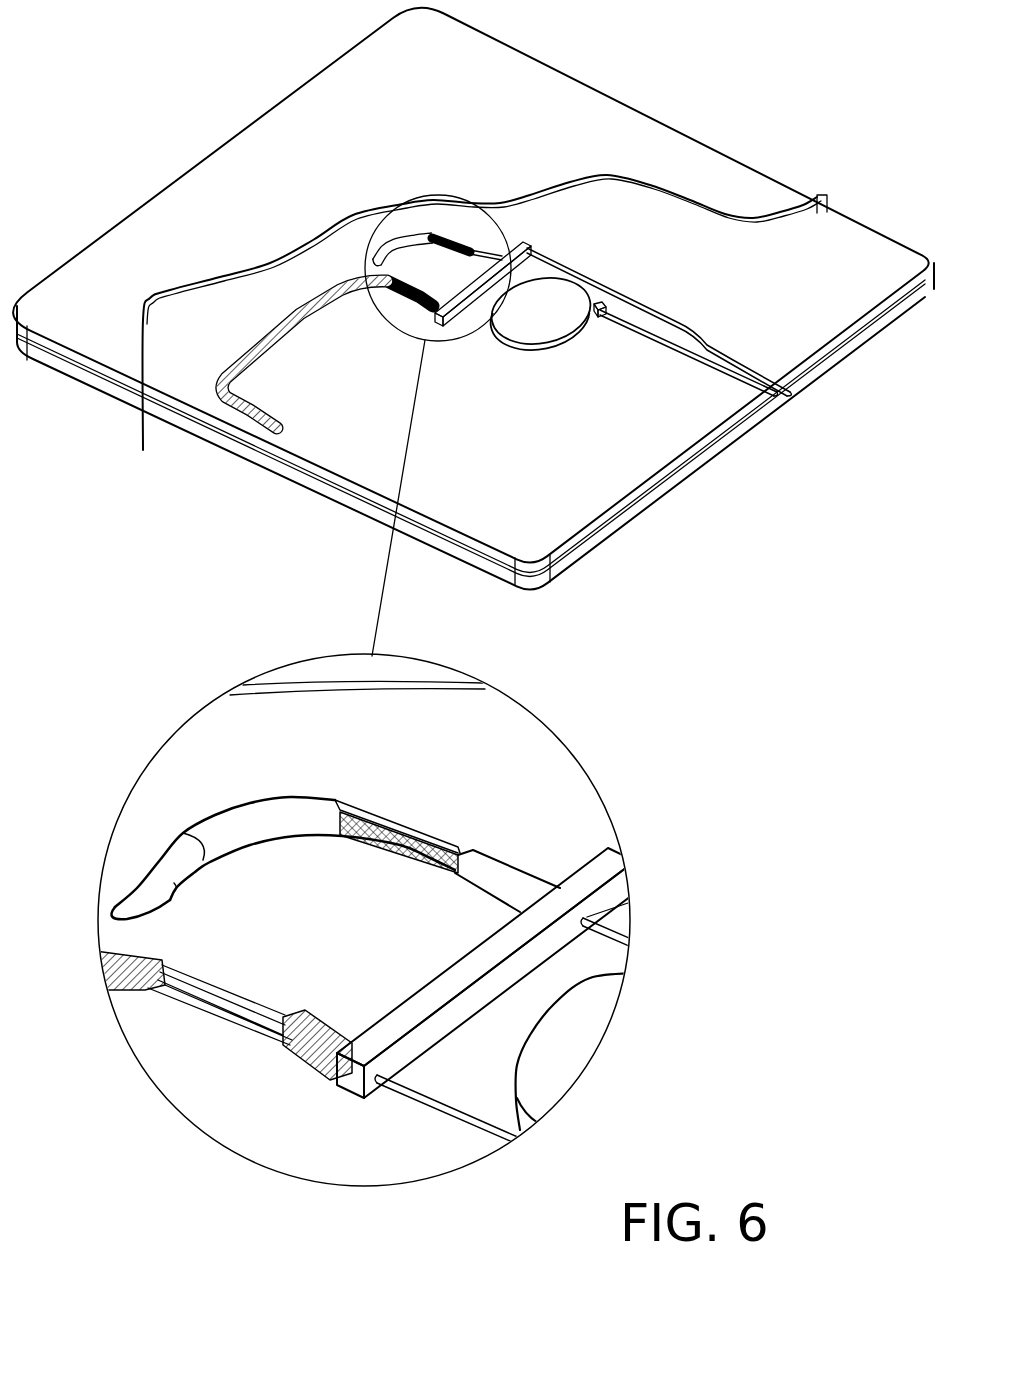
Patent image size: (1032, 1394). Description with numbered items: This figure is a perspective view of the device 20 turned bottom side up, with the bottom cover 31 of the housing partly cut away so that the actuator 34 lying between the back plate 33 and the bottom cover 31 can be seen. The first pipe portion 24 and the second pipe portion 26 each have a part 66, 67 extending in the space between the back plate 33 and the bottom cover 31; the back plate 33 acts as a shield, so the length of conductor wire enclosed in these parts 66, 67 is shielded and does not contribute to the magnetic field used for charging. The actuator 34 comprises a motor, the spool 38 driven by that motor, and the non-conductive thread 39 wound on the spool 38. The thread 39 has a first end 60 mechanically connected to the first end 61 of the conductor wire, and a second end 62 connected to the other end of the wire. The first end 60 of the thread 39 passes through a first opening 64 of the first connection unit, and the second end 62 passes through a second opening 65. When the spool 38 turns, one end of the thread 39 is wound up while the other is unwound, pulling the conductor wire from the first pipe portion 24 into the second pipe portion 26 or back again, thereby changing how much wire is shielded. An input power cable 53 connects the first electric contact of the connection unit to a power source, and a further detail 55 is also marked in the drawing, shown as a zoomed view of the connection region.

The device 20 is at (150, 90).
The bottom cover 31 is at (182, 235).
The back plate 33 is at (352, 443).
The part of the first pipe portion 66 is at (389, 228).
The part of the second pipe portion 67 is at (200, 389).
The second end of the thread 62 is at (438, 318).
The first end of the thread 60 is at (535, 313).
The first opening 64 is at (583, 920).
The input power cable 53 is at (743, 395).
The second wire end 55 is at (764, 367).
The spool 38 is at (574, 276).
The actuator 34 is at (598, 372).
The non-conductive thread 39 is at (537, 353).
The first pipe portion 24 is at (238, 827).
The first end of the conductor wire 61 is at (428, 828).
The second pipe portion 26 is at (312, 1065).
The second opening 65 is at (343, 1087).